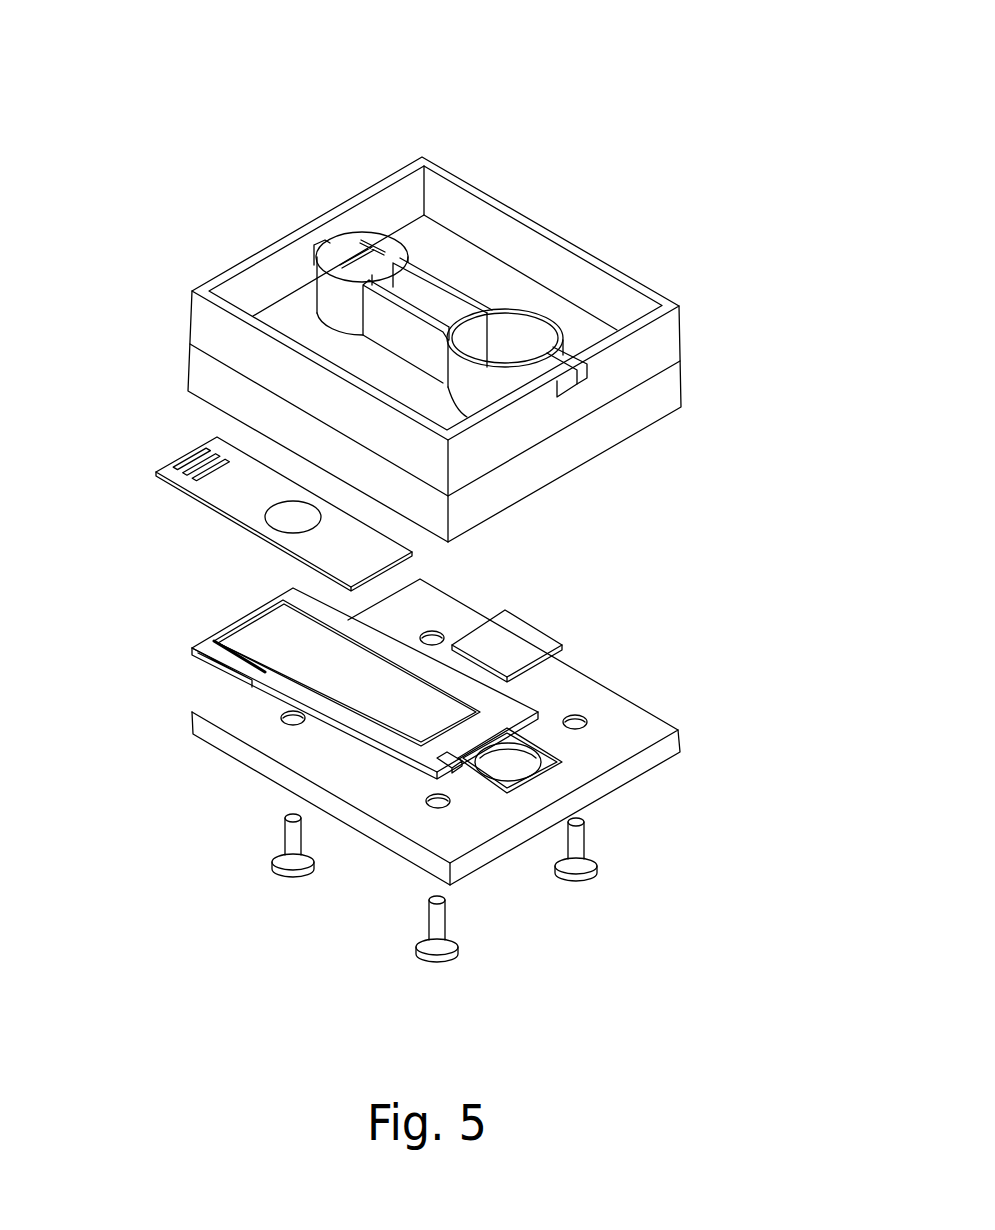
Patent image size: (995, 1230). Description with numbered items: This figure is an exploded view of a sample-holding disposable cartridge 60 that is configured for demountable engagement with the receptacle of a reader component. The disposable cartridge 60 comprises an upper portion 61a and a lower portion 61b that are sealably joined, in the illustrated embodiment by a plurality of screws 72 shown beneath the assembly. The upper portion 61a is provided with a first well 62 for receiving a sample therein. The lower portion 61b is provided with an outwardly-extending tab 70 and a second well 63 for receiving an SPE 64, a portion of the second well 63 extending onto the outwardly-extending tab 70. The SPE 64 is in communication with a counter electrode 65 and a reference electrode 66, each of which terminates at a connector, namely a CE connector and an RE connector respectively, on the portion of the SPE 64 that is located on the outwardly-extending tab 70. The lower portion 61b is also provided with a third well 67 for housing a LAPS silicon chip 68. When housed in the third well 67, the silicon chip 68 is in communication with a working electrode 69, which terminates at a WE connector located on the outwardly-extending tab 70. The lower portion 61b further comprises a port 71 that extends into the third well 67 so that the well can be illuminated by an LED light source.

The disposable cartridge 60 is at (331, 146).
The upper portion 61a is at (190, 333).
The lower portion 61b is at (248, 775).
The first well 62 is at (498, 328).
The second well 63 is at (280, 613).
The SPE 64 is at (365, 565).
The counter electrode 65 is at (205, 444).
The reference electrode 66 is at (170, 460).
The third well 67 is at (547, 770).
The LAPS silicon chip 68 is at (533, 623).
The working electrode 69 is at (230, 648).
The outwardly-extending tab 70 is at (215, 668).
The port 71 is at (503, 760).
The screws 72 is at (298, 878).